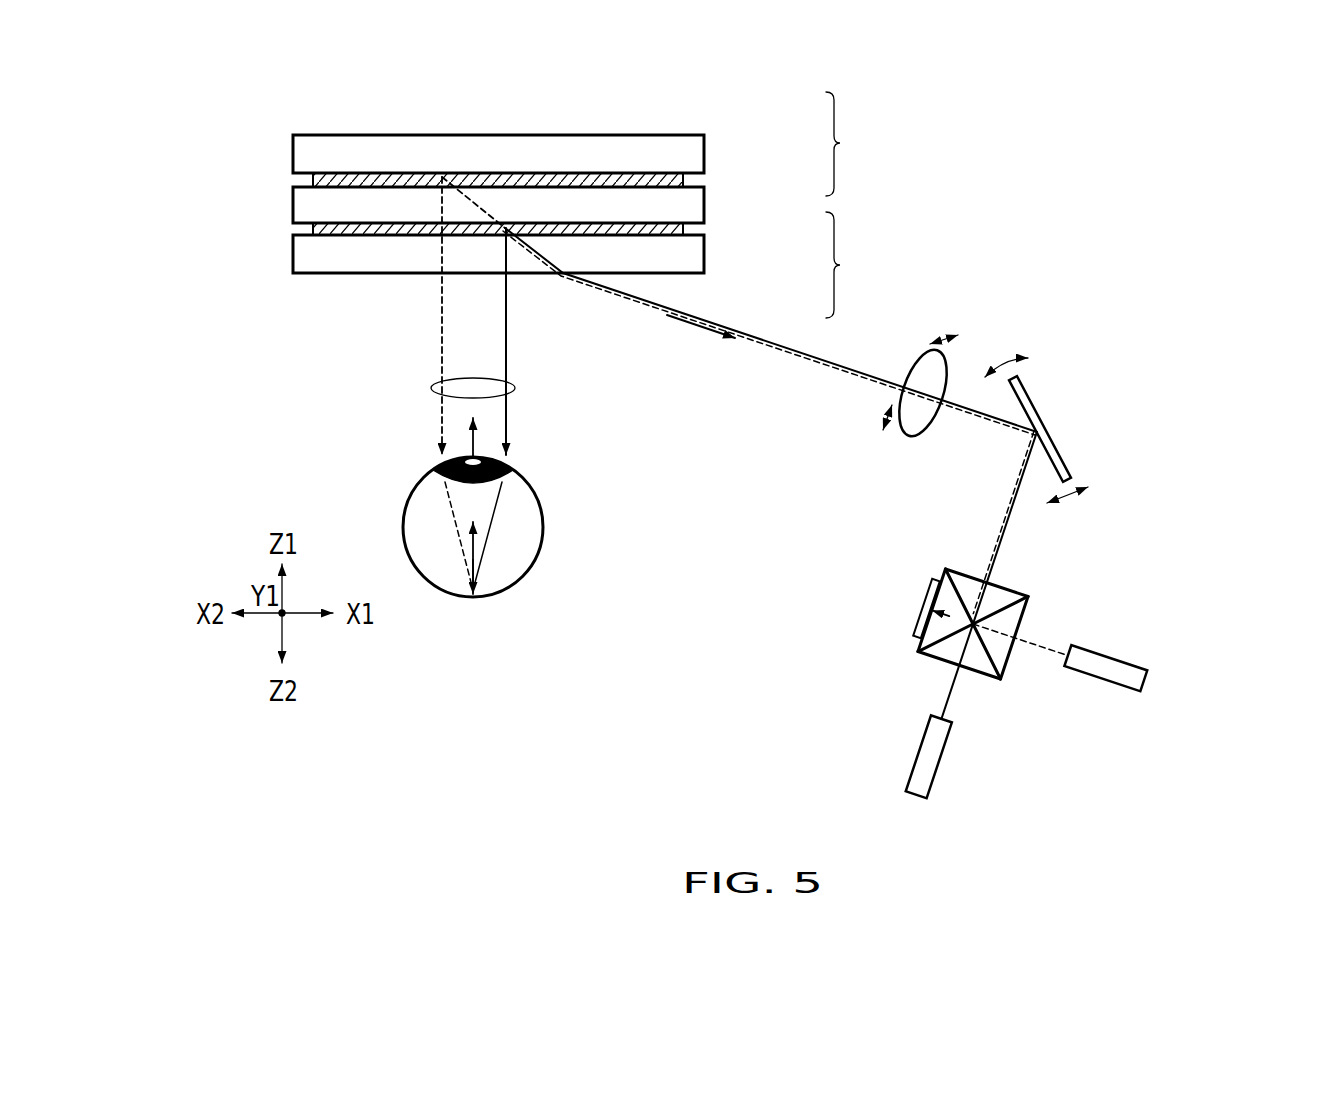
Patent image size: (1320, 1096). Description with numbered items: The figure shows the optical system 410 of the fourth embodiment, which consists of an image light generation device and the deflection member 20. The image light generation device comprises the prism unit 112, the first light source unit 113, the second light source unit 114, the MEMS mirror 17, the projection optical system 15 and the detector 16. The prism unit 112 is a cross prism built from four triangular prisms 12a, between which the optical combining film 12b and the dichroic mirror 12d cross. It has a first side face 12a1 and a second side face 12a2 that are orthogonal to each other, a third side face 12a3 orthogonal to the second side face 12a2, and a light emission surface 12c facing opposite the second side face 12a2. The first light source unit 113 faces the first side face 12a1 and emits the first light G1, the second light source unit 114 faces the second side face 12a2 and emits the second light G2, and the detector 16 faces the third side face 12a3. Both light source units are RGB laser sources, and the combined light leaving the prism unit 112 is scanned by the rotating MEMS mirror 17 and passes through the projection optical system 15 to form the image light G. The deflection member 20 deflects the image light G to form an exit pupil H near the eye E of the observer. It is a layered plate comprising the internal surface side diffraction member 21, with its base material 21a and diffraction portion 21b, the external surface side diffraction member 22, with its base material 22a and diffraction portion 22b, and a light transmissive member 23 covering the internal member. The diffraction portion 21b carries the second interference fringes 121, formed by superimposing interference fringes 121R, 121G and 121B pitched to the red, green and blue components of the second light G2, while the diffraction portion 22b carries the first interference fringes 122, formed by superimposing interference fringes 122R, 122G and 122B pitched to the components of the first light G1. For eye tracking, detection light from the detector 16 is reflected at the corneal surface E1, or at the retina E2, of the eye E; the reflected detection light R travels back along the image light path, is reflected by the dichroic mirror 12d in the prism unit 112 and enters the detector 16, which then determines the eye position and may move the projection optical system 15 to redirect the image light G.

The deflection member 20 is at (578, 115).
The internal surface side diffraction member 21 is at (453, 142).
The base material 21a is at (427, 197).
The diffraction portion 21b is at (540, 230).
The external surface side diffraction member 22 is at (453, 117).
The base material 22a is at (317, 147).
The diffraction portion 22b is at (353, 177).
The light transmissive member 23 is at (307, 257).
The second interference fringes 121 is at (757, 265).
The interference fringes 121R is at (625, 233).
The interference fringes 121G is at (642, 237).
The interference fringes 121B is at (642, 232).
The first interference fringes 122 is at (759, 144).
The interference fringes 122R is at (632, 175).
The interference fringes 122G is at (647, 178).
The interference fringes 122B is at (660, 178).
The projection optical system 15 is at (925, 363).
The MEMS mirror 17 is at (1028, 392).
The detector 16 is at (926, 608).
The prism unit 112 is at (1047, 634).
The triangular prisms 12a is at (980, 603).
The first side face 12a1 is at (1014, 637).
The second side face 12a2 is at (959, 665).
The third side face 12a3 is at (931, 610).
The optical combining film 12b is at (986, 651).
The light emission surface 12c is at (986, 582).
The dichroic mirror 12d is at (945, 637).
The first light source unit 113 is at (1105, 668).
The second light source unit 114 is at (929, 756).
The optical system 410 is at (1090, 183).
The image light G is at (787, 332).
The first light G1 is at (440, 345).
The second light G2 is at (509, 347).
The exit pupil H is at (516, 392).
The reflected detection light R is at (682, 320).
The eye E is at (403, 520).
The corneal surface E1 is at (484, 458).
The retina E2 is at (480, 591).